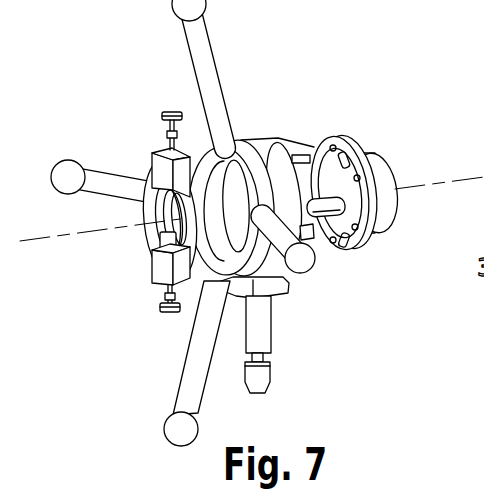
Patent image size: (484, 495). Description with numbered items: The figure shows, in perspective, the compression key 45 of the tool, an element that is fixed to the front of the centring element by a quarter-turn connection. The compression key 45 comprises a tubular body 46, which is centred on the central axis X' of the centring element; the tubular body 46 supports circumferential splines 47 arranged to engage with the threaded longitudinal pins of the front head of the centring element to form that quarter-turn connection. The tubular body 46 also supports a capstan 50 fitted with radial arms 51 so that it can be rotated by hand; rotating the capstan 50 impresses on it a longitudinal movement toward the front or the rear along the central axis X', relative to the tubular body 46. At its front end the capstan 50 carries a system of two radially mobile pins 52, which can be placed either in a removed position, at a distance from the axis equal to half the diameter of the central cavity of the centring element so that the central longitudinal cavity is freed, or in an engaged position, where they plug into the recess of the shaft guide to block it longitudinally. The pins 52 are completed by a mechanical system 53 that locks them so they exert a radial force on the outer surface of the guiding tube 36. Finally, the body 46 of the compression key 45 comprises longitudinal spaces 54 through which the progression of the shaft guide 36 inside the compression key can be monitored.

The compression key 45 is at (252, 223).
The tubular body 46 is at (310, 178).
The circumferential splines 47 is at (352, 247).
The capstan 50 is at (213, 145).
The radial arms 51 is at (207, 72).
The pins 52 is at (160, 170).
The mechanical system 53 is at (163, 128).
The longitudinal spaces 54 is at (375, 173).
The guiding tube 36 is at (343, 201).